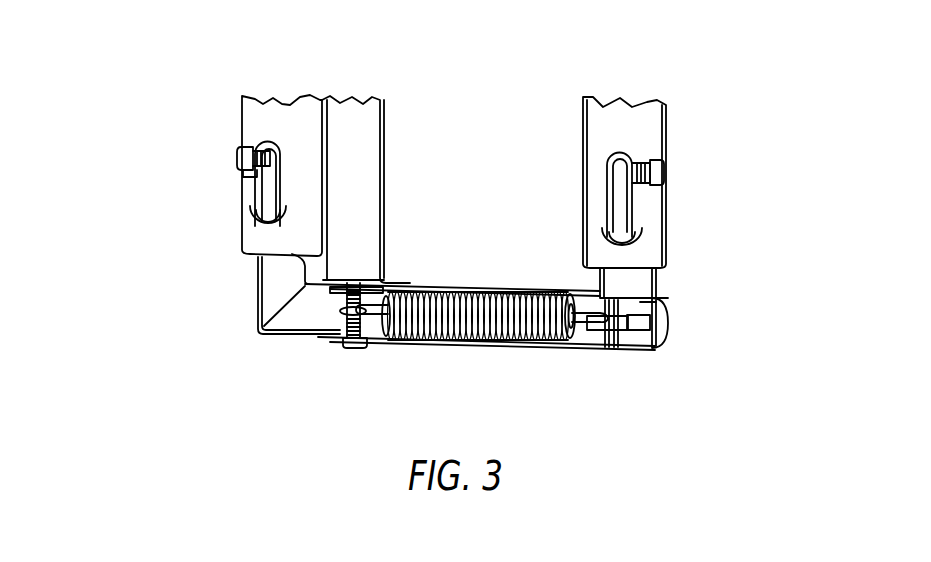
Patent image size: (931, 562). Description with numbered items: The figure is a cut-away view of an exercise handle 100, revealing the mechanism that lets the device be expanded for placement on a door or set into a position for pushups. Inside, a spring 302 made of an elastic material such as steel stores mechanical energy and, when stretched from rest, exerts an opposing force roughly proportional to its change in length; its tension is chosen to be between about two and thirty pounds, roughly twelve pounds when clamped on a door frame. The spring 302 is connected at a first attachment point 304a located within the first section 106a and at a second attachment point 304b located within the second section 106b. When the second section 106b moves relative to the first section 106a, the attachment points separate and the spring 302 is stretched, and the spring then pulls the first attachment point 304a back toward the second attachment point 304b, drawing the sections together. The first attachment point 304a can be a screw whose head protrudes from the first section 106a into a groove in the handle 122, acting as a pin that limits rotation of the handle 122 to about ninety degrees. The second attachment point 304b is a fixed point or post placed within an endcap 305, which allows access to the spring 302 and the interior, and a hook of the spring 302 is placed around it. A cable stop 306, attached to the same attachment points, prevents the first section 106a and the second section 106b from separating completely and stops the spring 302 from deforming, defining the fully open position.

The exercise handle 100 is at (180, 128).
The handle 122 is at (372, 131).
The spring 302 is at (446, 293).
The cable stop 306 is at (583, 315).
The endcap 305 is at (658, 300).
The first section 106a is at (282, 322).
The second section 106b is at (647, 315).
The first attachment point 304a is at (340, 330).
The second attachment point 304b is at (612, 337).